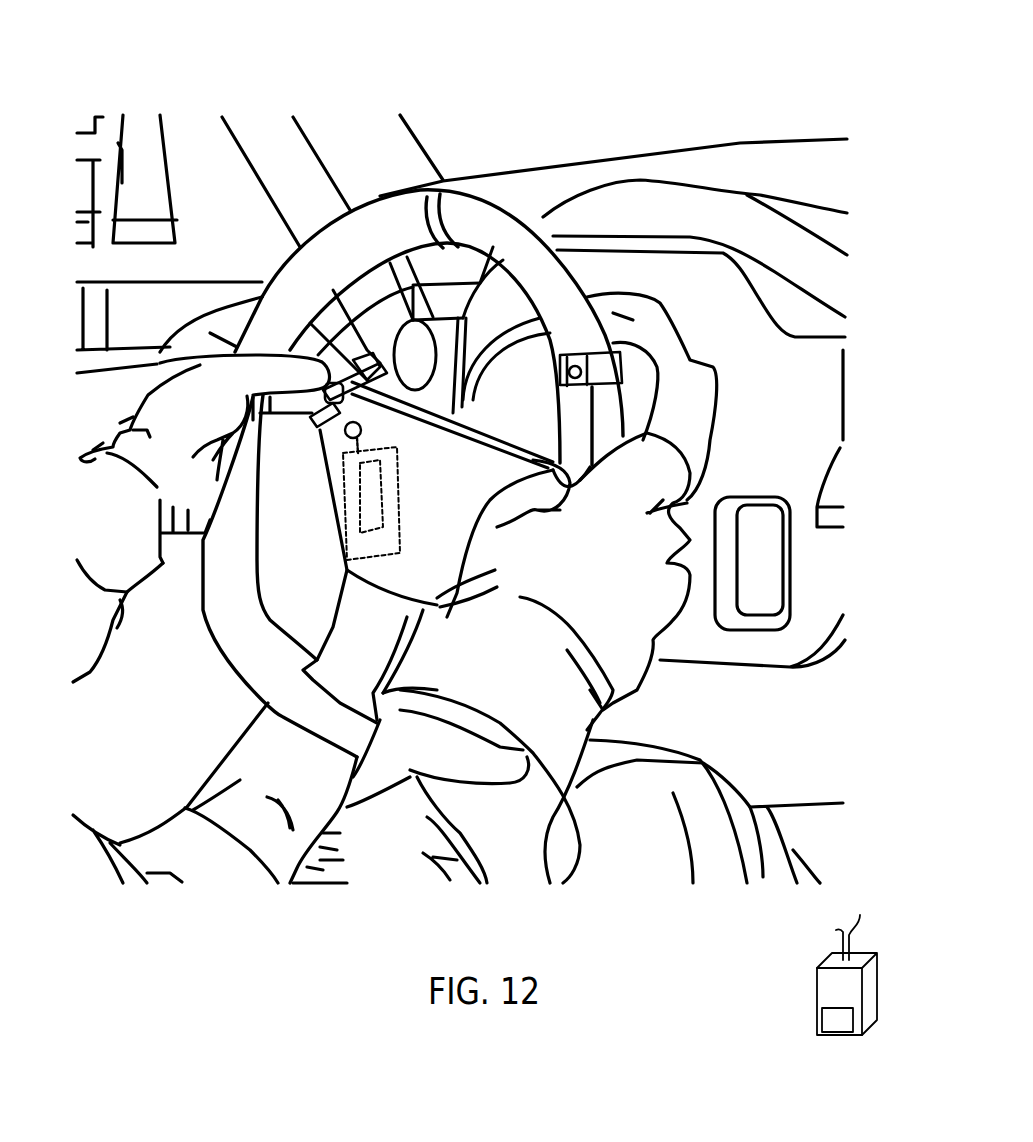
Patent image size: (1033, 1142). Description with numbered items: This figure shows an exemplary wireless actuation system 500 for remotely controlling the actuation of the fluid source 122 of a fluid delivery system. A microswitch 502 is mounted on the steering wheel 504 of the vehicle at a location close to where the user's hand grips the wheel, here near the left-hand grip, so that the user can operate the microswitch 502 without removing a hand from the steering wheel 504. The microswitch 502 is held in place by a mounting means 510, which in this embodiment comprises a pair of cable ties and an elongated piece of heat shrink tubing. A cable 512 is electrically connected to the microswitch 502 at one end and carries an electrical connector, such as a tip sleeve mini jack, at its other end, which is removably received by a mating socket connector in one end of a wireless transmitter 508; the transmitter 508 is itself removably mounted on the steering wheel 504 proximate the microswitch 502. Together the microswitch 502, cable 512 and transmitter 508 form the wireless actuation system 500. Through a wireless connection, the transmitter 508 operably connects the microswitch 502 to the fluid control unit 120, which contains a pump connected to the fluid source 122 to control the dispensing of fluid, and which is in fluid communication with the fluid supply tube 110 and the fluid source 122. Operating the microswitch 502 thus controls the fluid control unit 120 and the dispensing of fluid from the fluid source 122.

The wireless actuation system 500 is at (303, 527).
The microswitch 502 is at (321, 394).
The steering wheel 504 is at (356, 232).
The wireless transmitter 508 is at (372, 553).
The mounting means 510 is at (353, 388).
The cable 512 is at (356, 444).
The fluid supply tube 110 is at (860, 915).
The fluid source 122 is at (862, 953).
The fluid control unit 120 is at (840, 1035).